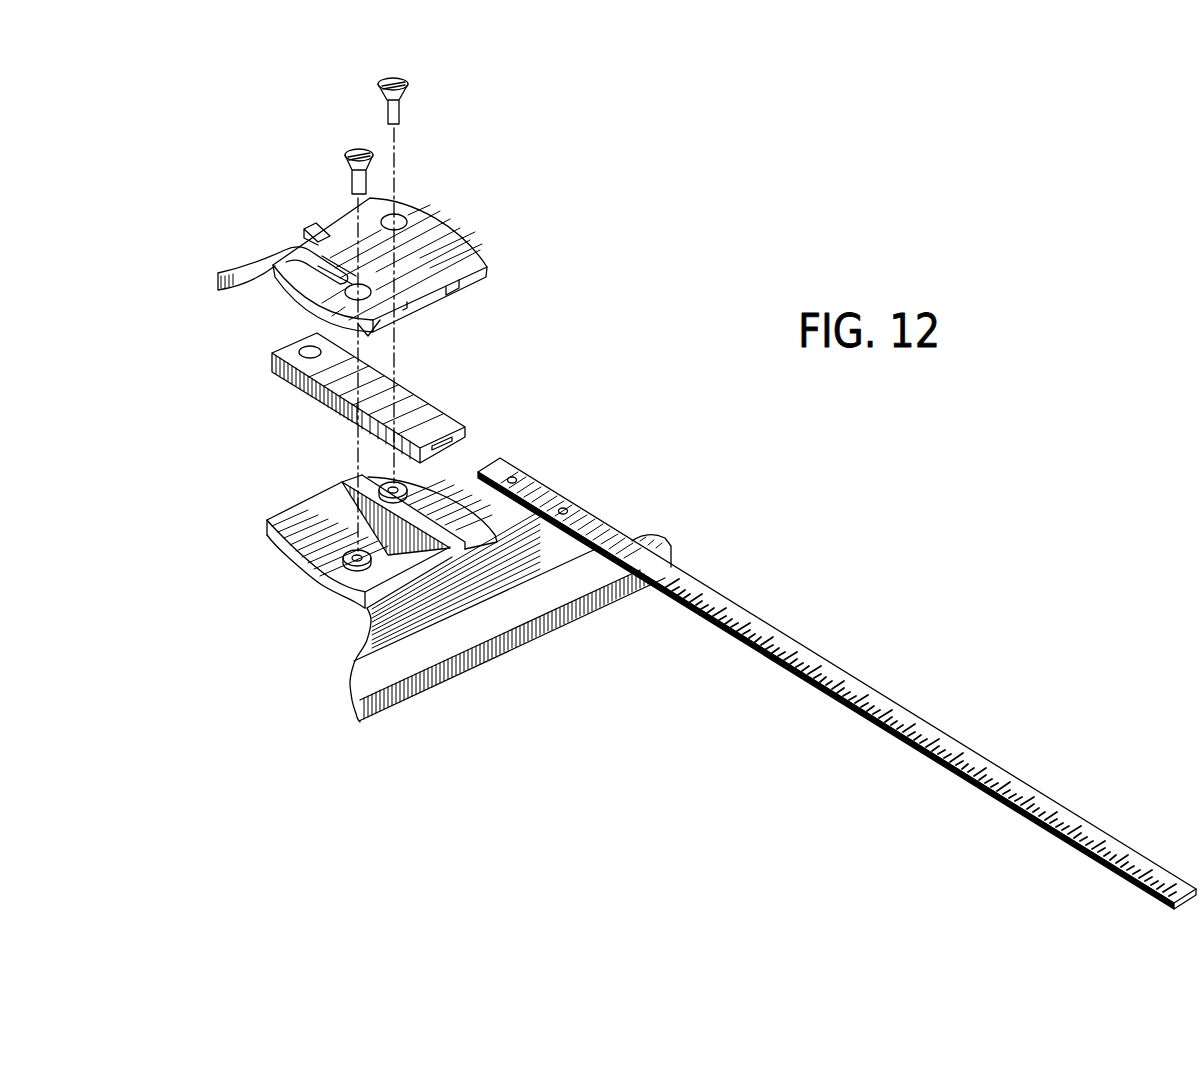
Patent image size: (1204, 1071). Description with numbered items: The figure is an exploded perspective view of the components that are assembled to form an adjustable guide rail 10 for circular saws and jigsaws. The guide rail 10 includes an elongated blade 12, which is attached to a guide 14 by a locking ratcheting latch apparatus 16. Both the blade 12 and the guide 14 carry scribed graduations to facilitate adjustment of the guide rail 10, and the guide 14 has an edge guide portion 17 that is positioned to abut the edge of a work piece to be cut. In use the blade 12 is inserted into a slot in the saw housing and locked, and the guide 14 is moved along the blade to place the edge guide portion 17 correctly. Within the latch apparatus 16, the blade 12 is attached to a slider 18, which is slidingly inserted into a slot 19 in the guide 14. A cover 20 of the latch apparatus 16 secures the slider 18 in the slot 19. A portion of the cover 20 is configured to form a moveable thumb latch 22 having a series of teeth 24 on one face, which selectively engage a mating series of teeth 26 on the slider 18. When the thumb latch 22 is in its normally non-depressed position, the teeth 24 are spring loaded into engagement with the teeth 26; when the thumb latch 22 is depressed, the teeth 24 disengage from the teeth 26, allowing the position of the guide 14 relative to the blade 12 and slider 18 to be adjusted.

The adjustable guide rail 10 is at (382, 182).
The elongated blade 12 is at (933, 730).
The guide 14 is at (352, 686).
The locking ratcheting latch apparatus 16 is at (218, 200).
The edge guide portion 17 is at (479, 653).
The slider 18 is at (397, 388).
The slot 19 is at (325, 503).
The cover 20 is at (472, 247).
The thumb latch 22 is at (302, 244).
The teeth 24 is at (330, 220).
The teeth 26 is at (312, 393).